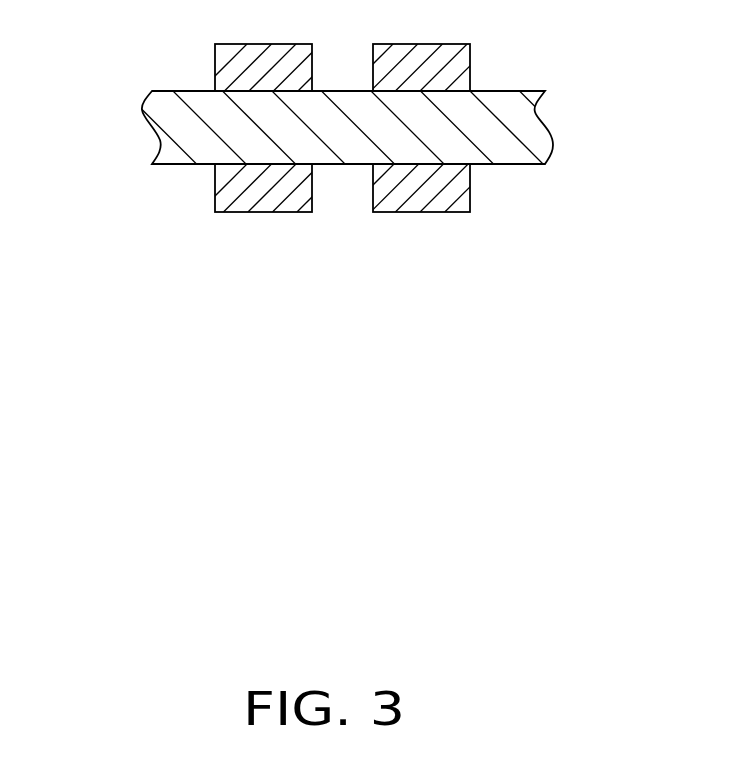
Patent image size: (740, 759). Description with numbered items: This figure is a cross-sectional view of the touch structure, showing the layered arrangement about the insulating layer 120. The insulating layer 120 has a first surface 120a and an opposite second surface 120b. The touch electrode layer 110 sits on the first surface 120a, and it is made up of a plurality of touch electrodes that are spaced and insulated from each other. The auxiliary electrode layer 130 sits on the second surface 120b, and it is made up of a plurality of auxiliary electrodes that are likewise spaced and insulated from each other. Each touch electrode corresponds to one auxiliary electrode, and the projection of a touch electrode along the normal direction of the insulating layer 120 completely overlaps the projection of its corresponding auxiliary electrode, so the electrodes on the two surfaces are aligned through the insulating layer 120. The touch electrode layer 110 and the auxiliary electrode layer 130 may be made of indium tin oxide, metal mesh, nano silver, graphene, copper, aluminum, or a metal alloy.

The touch electrode layer 110 is at (278, 55).
The insulating layer 120 is at (347, 130).
The first surface 120a is at (510, 91).
The second surface 120b is at (512, 165).
The auxiliary electrode layer 130 is at (278, 207).